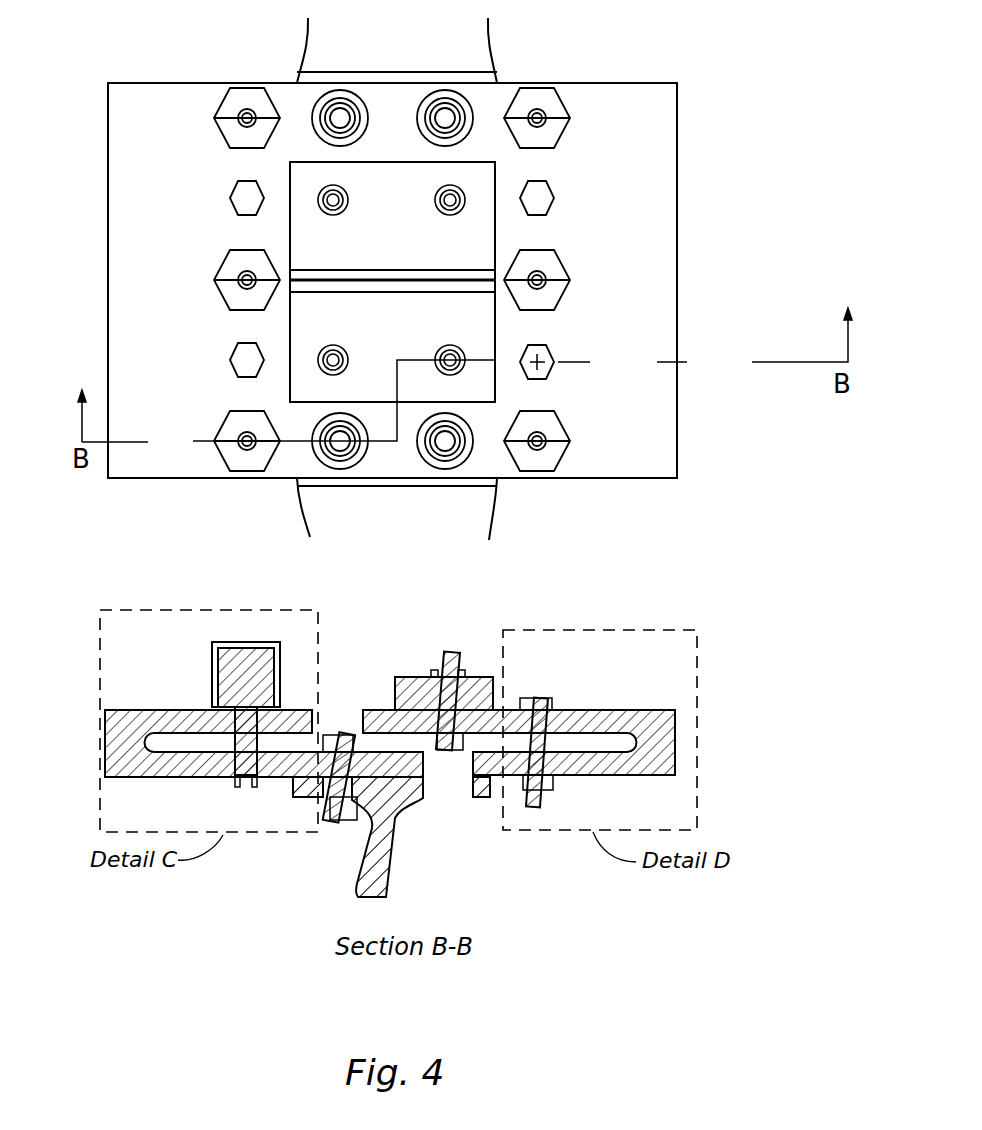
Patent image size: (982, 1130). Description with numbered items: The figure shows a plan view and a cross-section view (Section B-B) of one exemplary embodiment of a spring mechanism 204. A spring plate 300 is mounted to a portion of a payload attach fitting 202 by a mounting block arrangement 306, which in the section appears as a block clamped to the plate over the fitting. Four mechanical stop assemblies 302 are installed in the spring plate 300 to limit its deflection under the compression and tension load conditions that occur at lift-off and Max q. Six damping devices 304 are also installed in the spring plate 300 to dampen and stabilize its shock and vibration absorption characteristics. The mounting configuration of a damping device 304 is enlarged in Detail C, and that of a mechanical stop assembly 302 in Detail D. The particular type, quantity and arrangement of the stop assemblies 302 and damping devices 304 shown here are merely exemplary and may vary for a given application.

The payload attach fitting 202 is at (491, 520).
The spring mechanism 204 is at (633, 517).
The spring plate 300 is at (658, 450).
The mechanical stop assemblies 302 is at (233, 350).
The damping devices 304 is at (217, 430).
The mounting block arrangement 306 is at (303, 162).